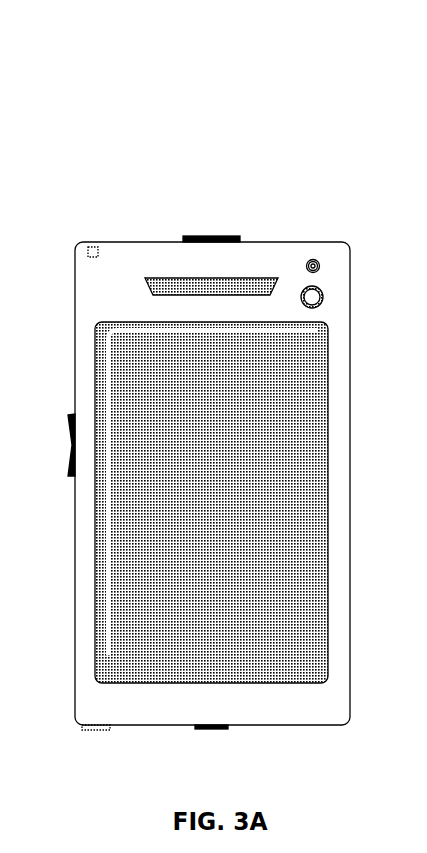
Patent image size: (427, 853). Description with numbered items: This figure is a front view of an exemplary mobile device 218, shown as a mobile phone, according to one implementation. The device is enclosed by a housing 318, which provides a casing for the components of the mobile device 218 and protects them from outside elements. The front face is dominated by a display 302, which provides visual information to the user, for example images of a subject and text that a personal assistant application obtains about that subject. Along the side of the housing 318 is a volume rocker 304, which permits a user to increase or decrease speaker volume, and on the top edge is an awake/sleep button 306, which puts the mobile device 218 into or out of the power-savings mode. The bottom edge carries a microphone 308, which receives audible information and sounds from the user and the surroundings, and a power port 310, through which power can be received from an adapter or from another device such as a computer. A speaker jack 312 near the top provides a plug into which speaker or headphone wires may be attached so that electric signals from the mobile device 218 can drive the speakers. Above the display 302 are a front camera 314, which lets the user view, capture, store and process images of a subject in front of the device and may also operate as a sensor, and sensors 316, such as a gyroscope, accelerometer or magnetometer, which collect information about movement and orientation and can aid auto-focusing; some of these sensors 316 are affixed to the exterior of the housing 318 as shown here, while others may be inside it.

The mobile device 218 is at (205, 74).
The display 302 is at (328, 596).
The volume rocker 304 is at (68, 420).
The awake/sleep button 306 is at (213, 236).
The microphone 308 is at (212, 730).
The power port 310 is at (92, 732).
The speaker jack 312 is at (92, 247).
The front camera 314 is at (322, 289).
The sensors 316 is at (313, 258).
The housing 318 is at (320, 725).